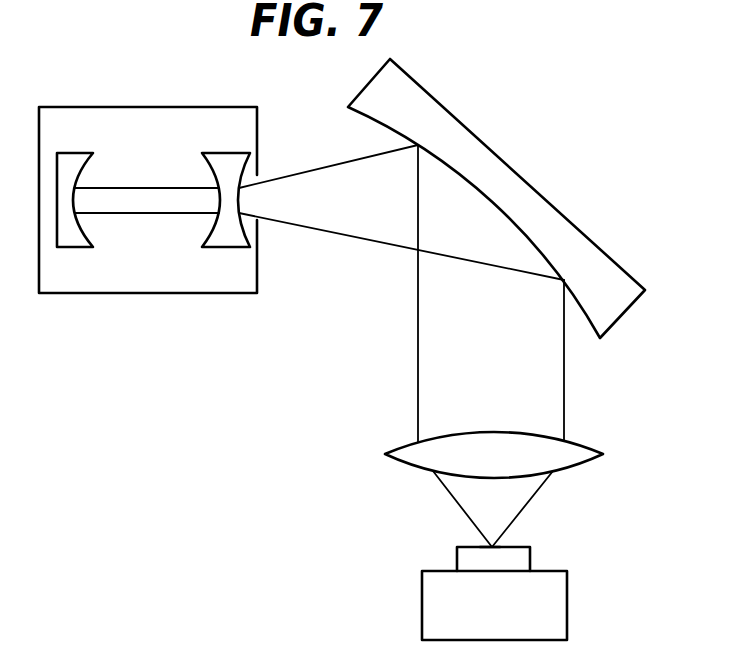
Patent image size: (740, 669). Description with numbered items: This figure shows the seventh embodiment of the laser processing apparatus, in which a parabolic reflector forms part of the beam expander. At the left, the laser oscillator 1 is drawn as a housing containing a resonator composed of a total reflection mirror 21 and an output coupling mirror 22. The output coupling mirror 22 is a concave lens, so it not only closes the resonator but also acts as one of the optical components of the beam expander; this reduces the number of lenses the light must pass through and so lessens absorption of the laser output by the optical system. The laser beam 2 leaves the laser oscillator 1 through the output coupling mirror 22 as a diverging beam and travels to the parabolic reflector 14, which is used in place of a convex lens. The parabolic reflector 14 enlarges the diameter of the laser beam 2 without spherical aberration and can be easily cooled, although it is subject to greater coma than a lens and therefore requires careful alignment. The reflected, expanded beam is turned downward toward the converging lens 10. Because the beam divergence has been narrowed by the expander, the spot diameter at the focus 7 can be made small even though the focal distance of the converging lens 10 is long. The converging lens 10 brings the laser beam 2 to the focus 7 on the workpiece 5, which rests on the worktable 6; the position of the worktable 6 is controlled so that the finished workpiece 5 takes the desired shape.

The laser oscillator 1 is at (156, 107).
The total reflection mirror 21 is at (82, 153).
The output coupling mirror 22 is at (237, 153).
The laser beam 2 is at (362, 241).
The parabolic reflector 14 is at (492, 150).
The converging lens 10 is at (604, 453).
The workpiece 5 is at (531, 557).
The focus 7 is at (478, 540).
The worktable 6 is at (567, 617).